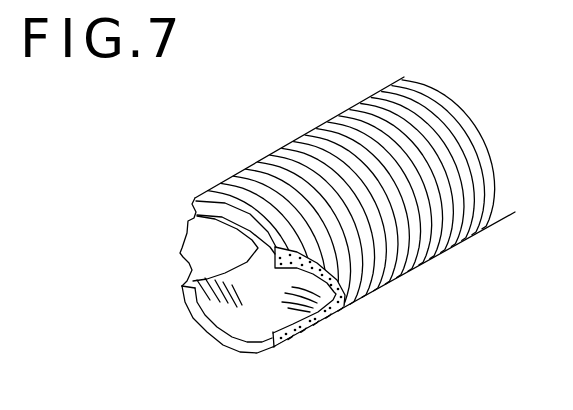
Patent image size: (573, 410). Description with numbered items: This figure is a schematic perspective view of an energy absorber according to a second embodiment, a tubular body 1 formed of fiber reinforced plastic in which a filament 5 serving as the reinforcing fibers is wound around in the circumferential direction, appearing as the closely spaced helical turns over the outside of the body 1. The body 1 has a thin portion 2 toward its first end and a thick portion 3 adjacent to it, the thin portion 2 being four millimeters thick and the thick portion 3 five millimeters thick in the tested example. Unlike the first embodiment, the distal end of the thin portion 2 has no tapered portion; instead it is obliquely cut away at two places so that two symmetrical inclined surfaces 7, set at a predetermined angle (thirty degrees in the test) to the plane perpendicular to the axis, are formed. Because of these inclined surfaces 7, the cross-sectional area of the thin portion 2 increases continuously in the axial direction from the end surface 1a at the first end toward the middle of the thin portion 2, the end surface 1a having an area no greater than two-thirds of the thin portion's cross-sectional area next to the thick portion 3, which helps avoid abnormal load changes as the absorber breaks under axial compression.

The body 1 is at (356, 212).
The end surface 1a is at (167, 242).
The thin portion 2 is at (270, 172).
The thick portion 3 is at (465, 138).
The filament 5 is at (483, 198).
The inclined surfaces 7 is at (281, 344).